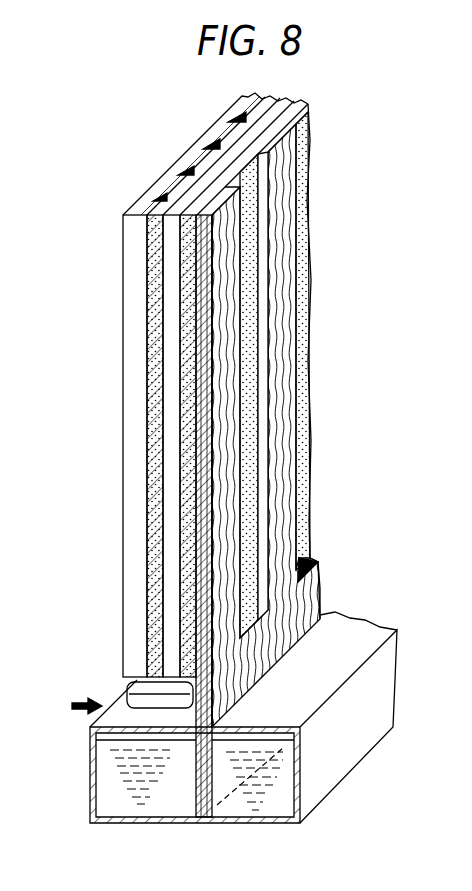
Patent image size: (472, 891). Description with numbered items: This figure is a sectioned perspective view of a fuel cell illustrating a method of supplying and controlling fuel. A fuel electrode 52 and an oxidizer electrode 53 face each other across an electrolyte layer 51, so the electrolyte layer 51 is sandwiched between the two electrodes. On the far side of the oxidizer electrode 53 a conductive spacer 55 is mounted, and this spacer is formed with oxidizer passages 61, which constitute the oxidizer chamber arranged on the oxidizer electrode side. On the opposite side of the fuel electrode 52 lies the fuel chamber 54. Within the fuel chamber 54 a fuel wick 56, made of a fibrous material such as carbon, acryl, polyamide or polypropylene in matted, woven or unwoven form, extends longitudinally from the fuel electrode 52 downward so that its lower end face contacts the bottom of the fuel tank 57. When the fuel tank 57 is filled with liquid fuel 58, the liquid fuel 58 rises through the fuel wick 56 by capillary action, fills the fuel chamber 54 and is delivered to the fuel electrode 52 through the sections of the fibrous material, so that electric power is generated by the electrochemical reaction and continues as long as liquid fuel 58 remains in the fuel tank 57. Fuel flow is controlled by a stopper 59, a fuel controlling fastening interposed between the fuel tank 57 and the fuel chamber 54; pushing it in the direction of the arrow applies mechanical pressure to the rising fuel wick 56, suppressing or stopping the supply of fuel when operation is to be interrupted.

The electrolyte layer 51 is at (172, 237).
The fuel electrode 52 is at (123, 332).
The oxidizer electrode 53 is at (163, 262).
The fuel chamber 54 is at (302, 508).
The conductive spacer 55 is at (133, 296).
The fuel wick 56 is at (317, 590).
The fuel tank 57 is at (90, 741).
The liquid fuel 58 is at (103, 782).
The stopper 59 is at (133, 700).
The oxidizer passages 61 is at (188, 153).